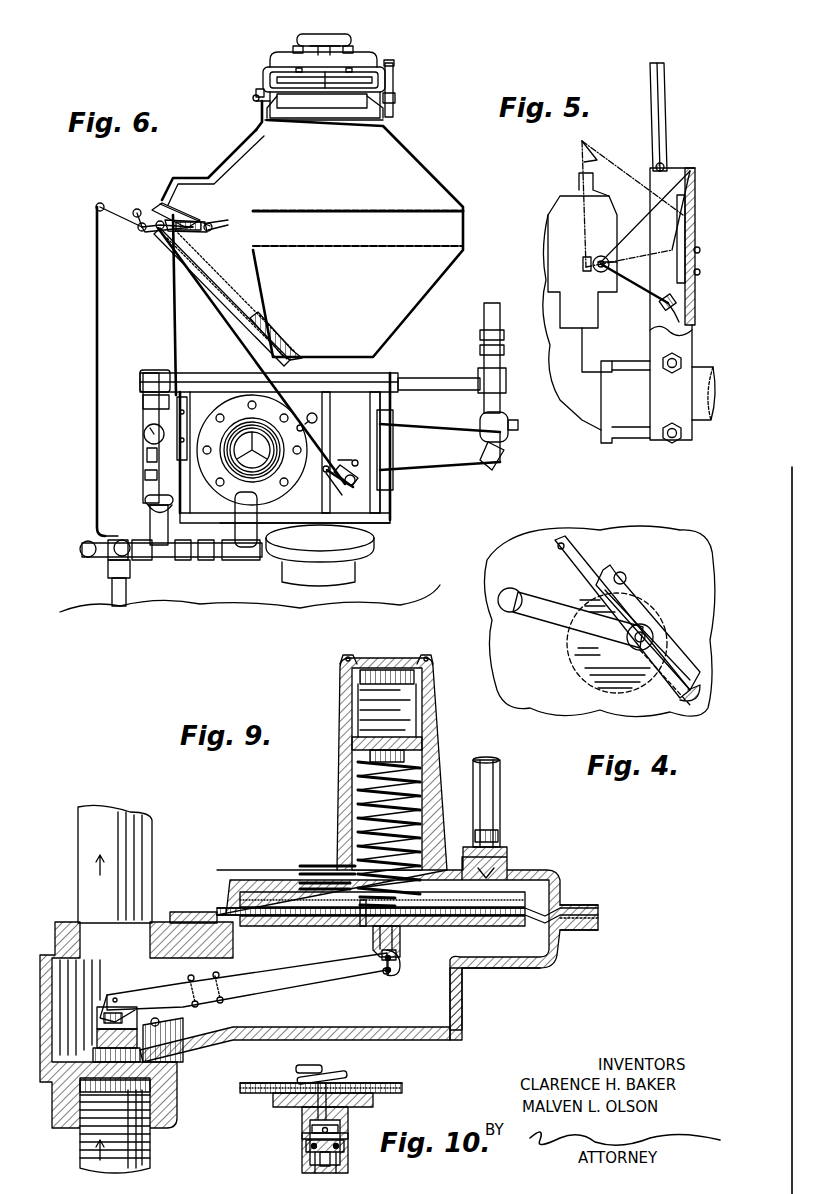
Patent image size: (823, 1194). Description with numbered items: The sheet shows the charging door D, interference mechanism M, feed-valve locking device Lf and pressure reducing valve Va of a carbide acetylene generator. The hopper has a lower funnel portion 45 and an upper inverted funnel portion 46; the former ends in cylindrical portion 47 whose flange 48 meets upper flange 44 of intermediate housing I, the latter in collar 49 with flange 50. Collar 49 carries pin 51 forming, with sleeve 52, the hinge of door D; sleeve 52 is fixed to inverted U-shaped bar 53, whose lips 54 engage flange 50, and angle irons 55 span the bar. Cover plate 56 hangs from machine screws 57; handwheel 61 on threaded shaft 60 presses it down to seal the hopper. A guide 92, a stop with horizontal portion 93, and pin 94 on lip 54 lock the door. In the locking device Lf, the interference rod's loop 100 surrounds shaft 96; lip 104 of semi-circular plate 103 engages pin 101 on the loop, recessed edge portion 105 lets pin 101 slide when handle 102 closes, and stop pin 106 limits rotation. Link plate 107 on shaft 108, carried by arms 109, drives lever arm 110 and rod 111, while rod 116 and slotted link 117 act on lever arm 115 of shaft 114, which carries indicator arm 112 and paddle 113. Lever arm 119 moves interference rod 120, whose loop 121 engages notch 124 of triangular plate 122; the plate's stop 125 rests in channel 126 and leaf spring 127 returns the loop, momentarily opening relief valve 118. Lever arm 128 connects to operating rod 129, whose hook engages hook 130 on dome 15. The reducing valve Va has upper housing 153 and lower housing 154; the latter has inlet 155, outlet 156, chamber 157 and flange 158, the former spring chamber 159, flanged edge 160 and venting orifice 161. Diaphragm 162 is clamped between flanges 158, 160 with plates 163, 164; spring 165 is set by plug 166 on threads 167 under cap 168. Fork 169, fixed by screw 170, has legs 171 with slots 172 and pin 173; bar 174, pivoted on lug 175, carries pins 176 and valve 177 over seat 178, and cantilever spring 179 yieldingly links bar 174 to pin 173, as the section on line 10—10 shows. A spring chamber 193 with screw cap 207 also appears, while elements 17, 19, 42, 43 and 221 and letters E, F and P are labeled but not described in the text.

In FIG. 6, the dome 15 is at (205, 598).
In FIG. 6, the pan 17 is at (326, 550).
In FIG. 6, the bottom plate 19 is at (383, 526).
In FIG. 6, the frame member 42 is at (354, 412).
In FIG. 4, the frame member 42 is at (533, 568).
In FIG. 6, the lower frame bar 43 is at (388, 515).
In FIG. 6, the upper flange 44 is at (345, 378).
In FIG. 6, the lower funnel-shaped portion 45 is at (413, 296).
In FIG. 6, the upper inverted funnel-shaped portion 46 is at (427, 196).
In FIG. 6, the short cylindrical portion 47 is at (356, 372).
In FIG. 6, the outwardly extending flange 48 is at (387, 376).
In FIG. 6, the reinforcing collar 49 is at (346, 98).
In FIG. 6, the outwardly extending flange 50 is at (328, 86).
In FIG. 6, the vertical pin 51 is at (398, 98).
In FIG. 6, the sleeve 52 is at (396, 67).
In FIG. 6, the inverted U-shaped bar 53 is at (266, 70).
In FIG. 6, the inwardly extending lips 54 is at (282, 103).
In FIG. 6, the reinforcing angle irons 55 is at (284, 56).
In FIG. 6, the circular cover plate 56 is at (311, 80).
In FIG. 6, the machine screws 57 is at (298, 48).
In FIG. 6, the vertical shaft 60 is at (338, 42).
In FIG. 6, the handwheel 61 is at (322, 34).
In FIG. 6, the guide 92 is at (258, 128).
In FIG. 6, the horizontal portion of stop 93 is at (254, 101).
In FIG. 6, the outwardly extending pin 94 is at (262, 92).
In FIG. 6, the shaft 96 is at (372, 478).
In FIG. 4, the shaft 96 is at (644, 632).
In FIG. 6, the loop 100 is at (360, 485).
In FIG. 4, the loop 100 is at (672, 652).
In FIG. 4, the pin 101 is at (690, 708).
In FIG. 6, the handle 102 is at (328, 480).
In FIG. 4, the handle 102 is at (545, 612).
In FIG. 6, the semi-circular plate 103 is at (335, 480).
In FIG. 4, the semi-circular plate 103 is at (600, 670).
In FIG. 6, the lip 104 is at (340, 460).
In FIG. 4, the lip 104 is at (606, 572).
In FIG. 4, the edge portion 105 is at (676, 690).
In FIG. 6, the stop pin 106 is at (358, 462).
In FIG. 4, the stop pin 106 is at (628, 578).
In FIG. 6, the link plate 107 is at (160, 200).
In FIG. 6, the horizontal rotatable shaft 108 is at (141, 232).
In FIG. 6, the arms 109 is at (180, 214).
In FIG. 6, the lever arm 110 is at (135, 210).
In FIG. 6, the interference rod 111 is at (233, 138).
In FIG. 6, the carbide level indicator arm 112 is at (248, 292).
In FIG. 6, the paddle 113 is at (298, 352).
In FIG. 6, the horizontally rotatable shaft 114 is at (212, 232).
In FIG. 6, the lever arm 115 is at (216, 222).
In FIG. 6, the rod 116 is at (205, 182).
In FIG. 6, the slotted link 117 is at (212, 220).
In FIG. 6, the acetylene pressure relief valve 118 is at (146, 415).
In FIG. 5, the acetylene pressure relief valve 118 is at (548, 252).
In FIG. 6, the lever arm 119 is at (157, 232).
In FIG. 6, the interference rod 120 is at (172, 314).
In FIG. 5, the interference rod 120 is at (668, 102).
In FIG. 5, the loop 121 is at (661, 180).
In FIG. 5, the triangular plate 122 is at (594, 234).
In FIG. 5, the notch 124 is at (699, 241).
In FIG. 5, the raised stop 125 is at (588, 140).
In FIG. 6, the channel 126 is at (186, 425).
In FIG. 5, the channel 126 is at (695, 212).
In FIG. 5, the leaf spring 127 is at (680, 303).
In FIG. 6, the lever arm 128 is at (106, 222).
In FIG. 6, the operating rod 129 is at (95, 364).
In FIG. 6, the second hook 130 is at (118, 590).
In FIG. 9, the upper housing 153 is at (542, 870).
In FIG. 9, the lower housing 154 is at (533, 968).
In FIG. 9, the gas inlet passage 155 is at (142, 1090).
In FIG. 9, the gas outlet passage 156 is at (140, 950).
In FIG. 9, the circular chamber 157 is at (515, 940).
In FIG. 9, the outwardly extending flange 158 is at (600, 916).
In FIG. 9, the spring chamber 159 is at (358, 831).
In FIG. 9, the flanged edge 160 is at (588, 904).
In FIG. 9, the venting orifice 161 is at (490, 878).
In FIG. 9, the flexible diaphragm 162 is at (217, 905).
In FIG. 10, the flexible diaphragm 162 is at (402, 1088).
In FIG. 9, the upper diaphragm contacting plate 163 is at (507, 890).
In FIG. 10, the upper diaphragm contacting plate 163 is at (385, 1084).
In FIG. 9, the lower diaphragm contacting plate 164 is at (475, 925).
In FIG. 10, the lower diaphragm contacting plate 164 is at (393, 1098).
In FIG. 9, the compression spring 165 is at (358, 860).
In FIG. 10, the compression spring 165 is at (297, 1071).
In FIG. 9, the peripherally threaded plug 166 is at (416, 740).
In FIG. 9, the threads 167 is at (358, 712).
In FIG. 9, the peripherally threaded cap 168 is at (375, 660).
In FIG. 9, the fork 169 is at (403, 935).
In FIG. 10, the fork 169 is at (302, 1118).
In FIG. 9, the screw 170 is at (382, 911).
In FIG. 10, the screw 170 is at (330, 1080).
In FIG. 9, the leg 171 is at (393, 950).
In FIG. 10, the leg 171 is at (345, 1127).
In FIG. 9, the slot 172 is at (385, 985).
In FIG. 10, the slot 172 is at (318, 1160).
In FIG. 9, the pin 173 is at (395, 965).
In FIG. 10, the pin 173 is at (320, 1130).
In FIG. 9, the lever arm or bar 174 is at (274, 998).
In FIG. 10, the lever arm or bar 174 is at (315, 1168).
In FIG. 9, the lug 175 is at (190, 1026).
In FIG. 9, the outwardly extending pins 176 is at (385, 974).
In FIG. 10, the outwardly extending pins 176 is at (310, 1148).
In FIG. 9, the valve 177 is at (105, 1025).
In FIG. 9, the seat 178 is at (100, 1040).
In FIG. 9, the cantilever spring 179 is at (316, 975).
In FIG. 10, the cantilever spring 179 is at (338, 1130).
In FIG. 6, the spring chamber 193 is at (452, 442).
In FIG. 6, the screw cap 207 is at (514, 436).
In FIG. 6, the pin 221 is at (312, 413).
In FIG. 9, the section line 10— 10 is at (375, 872).
In FIG. 6, the charging door D is at (375, 53).
In FIG. 6, the position E is at (216, 222).
In FIG. 6, the position F is at (228, 215).
In FIG. 6, the intermediate housing I is at (388, 402).
In FIG. 4, the intermediate housing I is at (530, 670).
In FIG. 6, the carbide feed-valve locking device Lf is at (330, 492).
In FIG. 4, the carbide feed-valve locking device Lf is at (612, 700).
In FIG. 6, the interference mechanism M is at (112, 190).
In FIG. 6, the pump flange P is at (233, 394).
In FIG. 6, the acetylene pressure reducing valve Va is at (195, 508).
In FIG. 9, the acetylene pressure reducing valve Va is at (472, 1003).